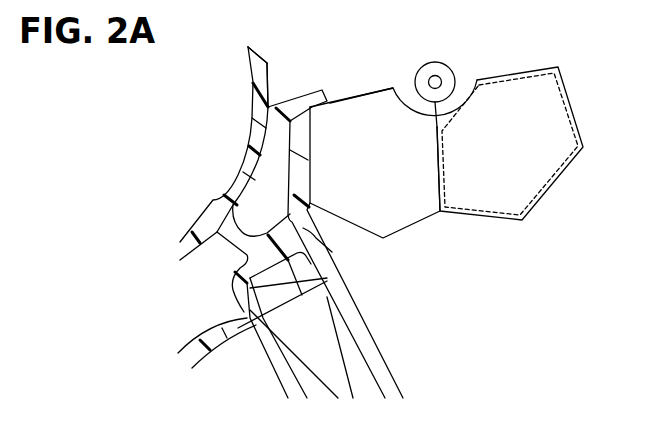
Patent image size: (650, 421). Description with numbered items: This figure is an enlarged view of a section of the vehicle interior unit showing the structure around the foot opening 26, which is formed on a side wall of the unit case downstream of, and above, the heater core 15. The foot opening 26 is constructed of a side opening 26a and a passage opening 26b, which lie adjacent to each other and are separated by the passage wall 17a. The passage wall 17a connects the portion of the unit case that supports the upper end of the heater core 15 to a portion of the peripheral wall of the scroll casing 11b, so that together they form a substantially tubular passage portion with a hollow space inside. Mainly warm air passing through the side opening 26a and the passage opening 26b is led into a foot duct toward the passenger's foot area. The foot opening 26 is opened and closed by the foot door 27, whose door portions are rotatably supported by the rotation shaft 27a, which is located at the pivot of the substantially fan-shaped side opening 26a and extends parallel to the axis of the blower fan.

The scroll casing 11b is at (252, 72).
The heater core 15 is at (308, 331).
The passage wall 17a is at (303, 127).
The foot opening 26 is at (406, 229).
The side opening 26a is at (362, 127).
The passage opening 26b is at (272, 173).
The foot door 27 is at (532, 97).
The rotation shaft 27a is at (452, 52).